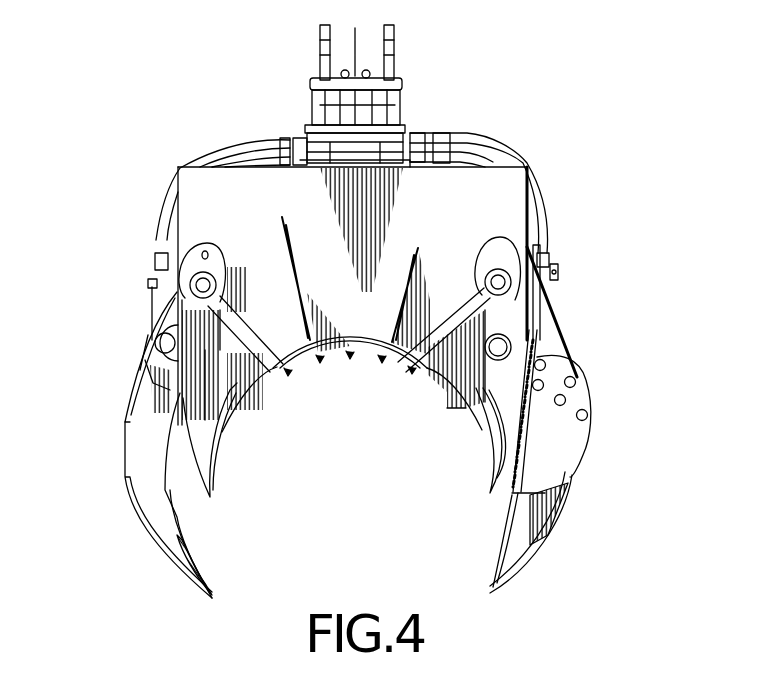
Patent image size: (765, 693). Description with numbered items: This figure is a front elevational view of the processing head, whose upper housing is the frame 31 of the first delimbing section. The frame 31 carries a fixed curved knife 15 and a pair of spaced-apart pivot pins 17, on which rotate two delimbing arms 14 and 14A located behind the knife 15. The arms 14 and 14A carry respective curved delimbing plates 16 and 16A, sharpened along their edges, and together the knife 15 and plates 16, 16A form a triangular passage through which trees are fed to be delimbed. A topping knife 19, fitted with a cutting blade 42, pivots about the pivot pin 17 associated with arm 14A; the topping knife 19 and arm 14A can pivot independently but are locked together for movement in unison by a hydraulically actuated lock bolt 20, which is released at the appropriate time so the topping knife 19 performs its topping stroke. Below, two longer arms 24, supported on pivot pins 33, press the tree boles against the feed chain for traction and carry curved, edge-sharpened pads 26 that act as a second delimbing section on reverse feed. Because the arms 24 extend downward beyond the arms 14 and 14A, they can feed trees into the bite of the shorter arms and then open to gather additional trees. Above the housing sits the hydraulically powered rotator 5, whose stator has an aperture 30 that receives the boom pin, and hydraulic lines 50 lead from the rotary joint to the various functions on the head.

The rotator 5 is at (412, 97).
The arm 14 is at (205, 407).
The arm 14A is at (497, 405).
The curved knife 15 is at (527, 313).
The delimbing plate 16 is at (205, 455).
The delimbing plate 16A is at (490, 455).
The pivot pin 17 is at (180, 254).
The topping knife 19 is at (553, 360).
The lock bolt 20 is at (540, 334).
The arm 24 is at (130, 468).
The pad 26 is at (190, 565).
The aperture 30 is at (395, 40).
The frame 31 is at (497, 197).
The pivot pin 33 is at (165, 344).
The cutting blade 42 is at (560, 445).
The lines 50 is at (472, 147).